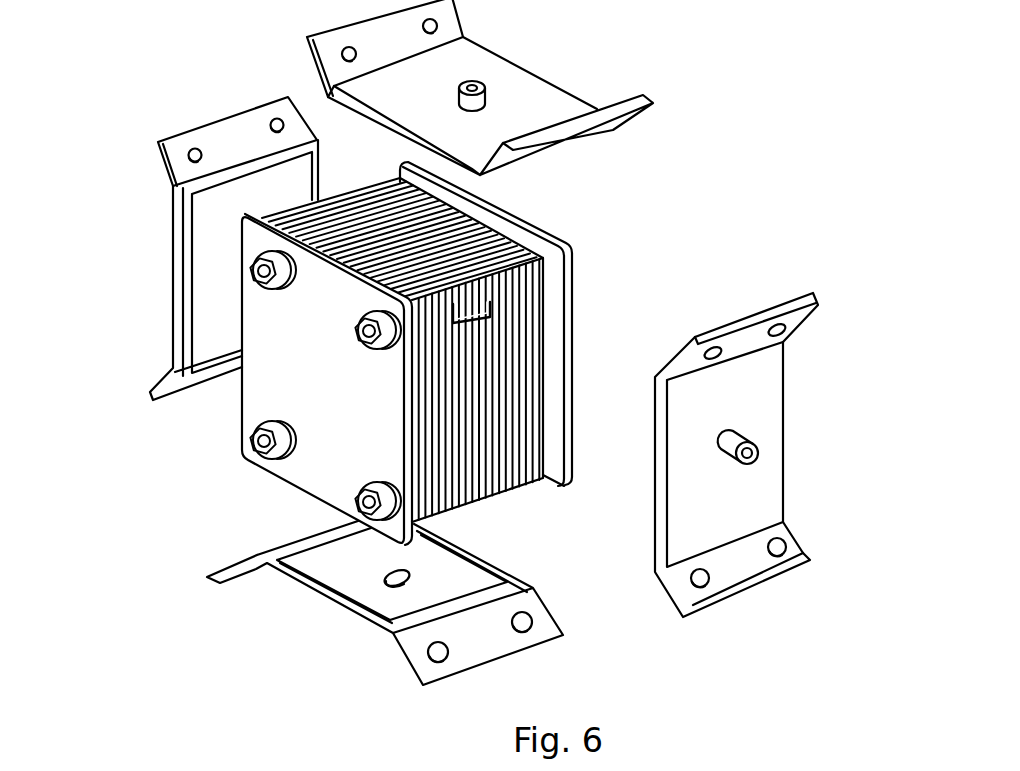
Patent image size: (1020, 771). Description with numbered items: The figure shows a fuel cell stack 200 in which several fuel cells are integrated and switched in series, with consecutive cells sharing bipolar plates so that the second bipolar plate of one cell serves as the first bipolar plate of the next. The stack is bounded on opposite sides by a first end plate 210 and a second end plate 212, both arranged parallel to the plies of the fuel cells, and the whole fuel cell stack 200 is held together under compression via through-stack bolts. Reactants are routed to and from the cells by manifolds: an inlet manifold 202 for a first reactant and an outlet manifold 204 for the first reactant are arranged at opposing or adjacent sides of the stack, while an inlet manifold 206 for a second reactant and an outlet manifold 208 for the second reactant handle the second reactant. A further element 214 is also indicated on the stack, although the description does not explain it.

The fuel cell stack 200 is at (670, 192).
The inlet manifold for a first reactant 202 is at (795, 442).
The outlet manifold for the first reactant 204 is at (170, 207).
The inlet manifold for a second reactant 206 is at (344, 634).
The outlet manifold for the second reactant 208 is at (580, 70).
The first end plate 210 is at (280, 396).
The second end plate 212 is at (590, 297).
The tab 214 is at (482, 332).